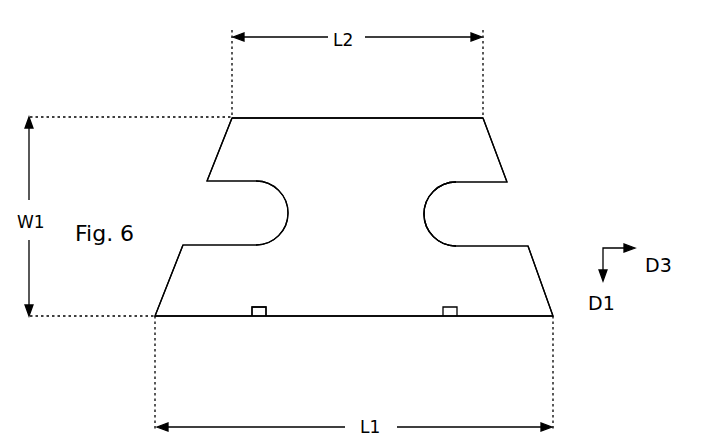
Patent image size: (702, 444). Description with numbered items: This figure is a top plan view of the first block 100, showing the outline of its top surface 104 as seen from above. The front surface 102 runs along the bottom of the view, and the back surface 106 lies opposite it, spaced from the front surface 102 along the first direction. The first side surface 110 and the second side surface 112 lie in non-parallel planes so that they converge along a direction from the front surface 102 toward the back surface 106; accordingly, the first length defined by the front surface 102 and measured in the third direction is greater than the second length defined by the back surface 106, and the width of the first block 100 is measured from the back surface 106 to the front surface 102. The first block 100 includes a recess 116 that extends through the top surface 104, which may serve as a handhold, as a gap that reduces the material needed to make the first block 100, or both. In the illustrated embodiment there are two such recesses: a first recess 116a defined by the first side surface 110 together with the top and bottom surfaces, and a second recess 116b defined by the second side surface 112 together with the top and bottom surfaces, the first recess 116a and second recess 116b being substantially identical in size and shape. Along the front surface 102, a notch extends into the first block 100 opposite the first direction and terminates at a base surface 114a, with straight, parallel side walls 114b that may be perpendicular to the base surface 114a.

The first block 100 is at (428, 340).
The front surface 102 is at (355, 316).
The top surface 104 is at (205, 288).
The back surface 106 is at (345, 118).
The first side surface 110 is at (222, 147).
The second side surface 112 is at (497, 157).
The base surface 114a is at (258, 308).
The side walls 114b is at (262, 308).
The recess 116 is at (483, 213).
The first recess 116a is at (243, 212).
The second recess 116b is at (465, 208).